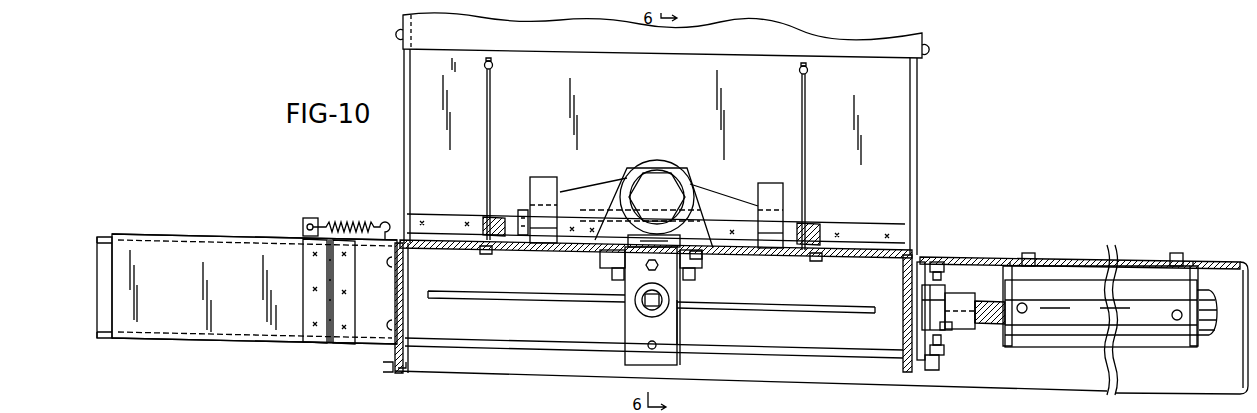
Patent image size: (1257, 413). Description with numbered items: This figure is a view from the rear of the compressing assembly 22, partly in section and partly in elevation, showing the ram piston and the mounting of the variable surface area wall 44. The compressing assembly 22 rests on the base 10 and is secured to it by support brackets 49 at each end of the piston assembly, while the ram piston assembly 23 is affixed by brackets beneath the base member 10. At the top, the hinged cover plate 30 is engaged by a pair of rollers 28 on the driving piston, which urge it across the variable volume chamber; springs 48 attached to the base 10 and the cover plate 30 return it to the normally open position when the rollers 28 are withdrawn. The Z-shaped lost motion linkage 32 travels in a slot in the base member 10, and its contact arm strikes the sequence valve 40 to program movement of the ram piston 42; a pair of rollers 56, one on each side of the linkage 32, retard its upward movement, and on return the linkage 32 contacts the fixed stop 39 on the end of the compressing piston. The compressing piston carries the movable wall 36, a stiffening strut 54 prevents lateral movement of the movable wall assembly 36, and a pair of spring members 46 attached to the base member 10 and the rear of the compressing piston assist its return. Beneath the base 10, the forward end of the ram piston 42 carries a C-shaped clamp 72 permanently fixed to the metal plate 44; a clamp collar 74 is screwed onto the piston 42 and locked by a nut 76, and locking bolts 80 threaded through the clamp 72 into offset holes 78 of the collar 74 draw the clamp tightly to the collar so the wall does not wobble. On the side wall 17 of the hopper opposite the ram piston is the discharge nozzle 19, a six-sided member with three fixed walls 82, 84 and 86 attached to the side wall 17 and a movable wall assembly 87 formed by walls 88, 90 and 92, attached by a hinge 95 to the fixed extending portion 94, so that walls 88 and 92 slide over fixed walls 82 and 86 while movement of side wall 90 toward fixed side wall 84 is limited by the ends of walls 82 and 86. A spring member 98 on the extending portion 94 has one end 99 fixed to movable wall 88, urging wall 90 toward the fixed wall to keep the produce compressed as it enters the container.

The base member 10 is at (1110, 256).
The side wall of the hopper 17 is at (402, 152).
The discharge nozzle 19 is at (215, 352).
The compressing assembly 22 is at (623, 168).
The ram piston assembly 23 is at (1029, 350).
The rollers 28 is at (543, 184).
The hinged cover plate 30 is at (412, 70).
The Z-shaped lost motion linkage 32 is at (660, 272).
The movable wall 36 is at (730, 342).
The fixed stop 39 is at (672, 325).
The sequence valve 40 is at (625, 333).
The ram piston 42 is at (972, 300).
The variable surface area wall 44 is at (915, 340).
The spring members 46 is at (923, 370).
The cover plate springs 48 is at (490, 95).
The support brackets 49 is at (632, 166).
The stiffening strut 54 is at (776, 306).
The rollers 56 is at (606, 268).
The C-shaped clamp 72 is at (953, 292).
The clamp collar 74 is at (940, 318).
The nut 76 is at (950, 328).
The holes 78 is at (905, 300).
The locking bolts 80 is at (938, 262).
The fixed wall 82 is at (108, 236).
The fixed side wall 84 is at (100, 300).
The fixed wall 86 is at (105, 339).
The movable wall assembly 87 is at (161, 242).
The movable wall 88 is at (200, 232).
The movable side wall 90 is at (160, 302).
The movable wall 92 is at (168, 345).
The fixed extending portion 94 is at (370, 332).
The hinge 95 is at (318, 332).
The spring member 98 is at (341, 226).
The end of spring member 99 is at (310, 222).